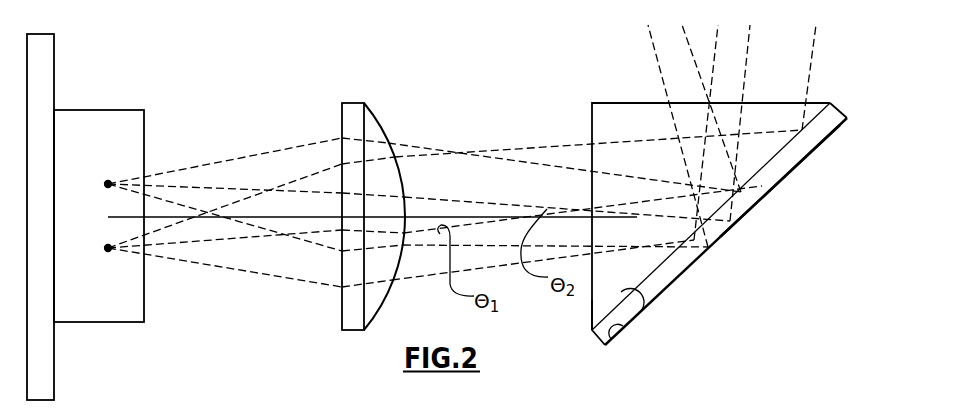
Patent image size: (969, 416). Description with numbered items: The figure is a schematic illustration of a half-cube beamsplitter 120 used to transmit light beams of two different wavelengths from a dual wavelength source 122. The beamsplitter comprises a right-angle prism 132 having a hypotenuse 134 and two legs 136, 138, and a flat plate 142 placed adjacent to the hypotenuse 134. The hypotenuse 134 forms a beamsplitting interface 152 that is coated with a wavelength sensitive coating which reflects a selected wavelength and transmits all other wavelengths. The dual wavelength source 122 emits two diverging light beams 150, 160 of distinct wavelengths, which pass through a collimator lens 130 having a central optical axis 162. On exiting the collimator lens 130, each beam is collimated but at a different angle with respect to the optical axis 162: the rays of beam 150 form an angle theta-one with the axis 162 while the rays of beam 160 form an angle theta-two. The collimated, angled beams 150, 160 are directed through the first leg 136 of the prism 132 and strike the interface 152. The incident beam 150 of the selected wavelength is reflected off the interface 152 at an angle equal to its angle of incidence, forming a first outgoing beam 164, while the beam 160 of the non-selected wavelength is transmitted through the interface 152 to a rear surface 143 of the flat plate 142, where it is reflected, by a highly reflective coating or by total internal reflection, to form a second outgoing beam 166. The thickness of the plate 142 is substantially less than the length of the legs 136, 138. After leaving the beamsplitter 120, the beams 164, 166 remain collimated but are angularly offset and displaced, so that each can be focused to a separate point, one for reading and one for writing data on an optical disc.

The half-cube beamsplitter 120 is at (789, 248).
The dual wavelength source 122 is at (128, 110).
The collimator lens 130 is at (355, 103).
The right-angle prism 132 is at (591, 121).
The hypotenuse 134 is at (640, 312).
The first leg 136 is at (591, 313).
The second leg 138 is at (794, 102).
The flat plate 142 is at (818, 135).
The rear surface 143 is at (613, 338).
The light beam 150 is at (250, 273).
The beamsplitting interface 152 is at (822, 101).
The light beam 160 is at (220, 160).
The central optical axis 162 is at (444, 216).
The first outgoing beam 164 is at (810, 63).
The second outgoing beam 166 is at (658, 64).